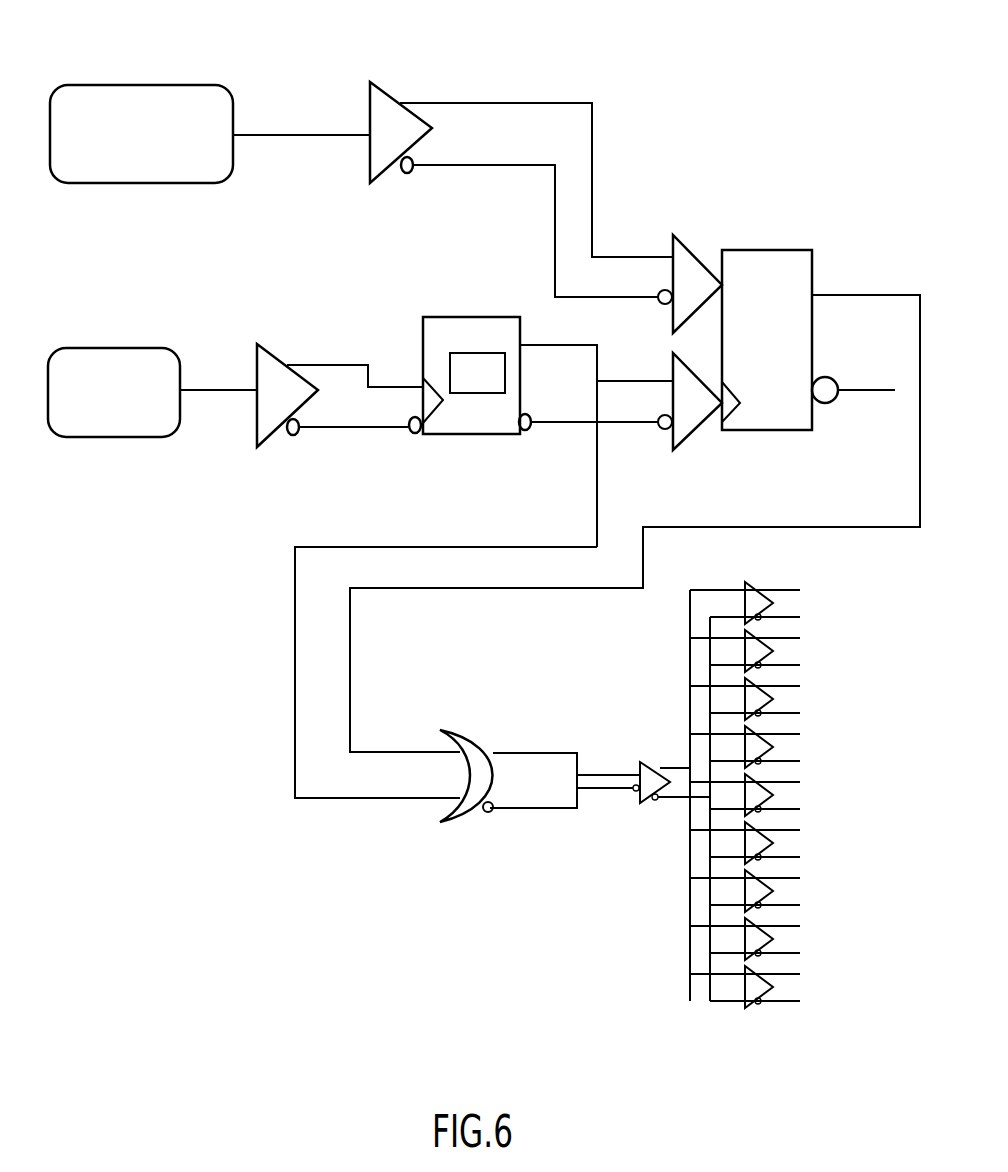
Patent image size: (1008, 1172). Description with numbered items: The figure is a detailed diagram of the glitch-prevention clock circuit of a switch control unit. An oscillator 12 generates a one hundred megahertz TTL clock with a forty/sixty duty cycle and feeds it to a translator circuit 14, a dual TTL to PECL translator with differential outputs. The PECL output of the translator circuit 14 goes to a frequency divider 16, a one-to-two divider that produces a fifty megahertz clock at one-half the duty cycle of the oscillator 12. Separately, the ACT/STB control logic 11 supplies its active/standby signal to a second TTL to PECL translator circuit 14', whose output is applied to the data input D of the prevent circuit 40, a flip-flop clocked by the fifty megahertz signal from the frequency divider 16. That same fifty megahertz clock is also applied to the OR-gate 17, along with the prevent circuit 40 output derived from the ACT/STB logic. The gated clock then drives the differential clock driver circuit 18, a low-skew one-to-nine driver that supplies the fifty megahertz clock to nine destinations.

The active/standby control logic 11 is at (118, 85).
The second TTL to PECL translator circuit 14' is at (500, 158).
The oscillator 12 is at (155, 348).
The translator circuit 14 is at (319, 365).
The frequency divider 16 is at (463, 317).
The prevent circuit 40 is at (800, 250).
The OR-gate 17 is at (487, 812).
The differential clock driver circuit 18 is at (690, 717).